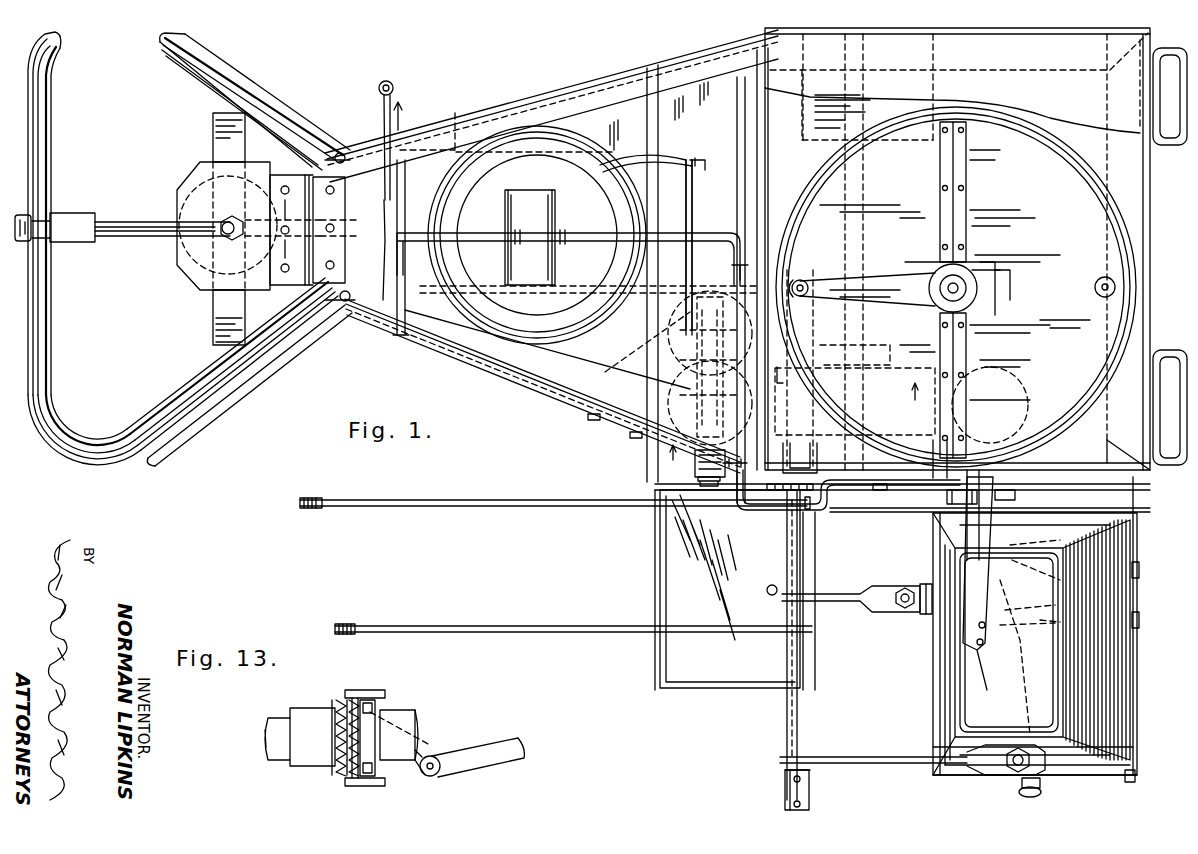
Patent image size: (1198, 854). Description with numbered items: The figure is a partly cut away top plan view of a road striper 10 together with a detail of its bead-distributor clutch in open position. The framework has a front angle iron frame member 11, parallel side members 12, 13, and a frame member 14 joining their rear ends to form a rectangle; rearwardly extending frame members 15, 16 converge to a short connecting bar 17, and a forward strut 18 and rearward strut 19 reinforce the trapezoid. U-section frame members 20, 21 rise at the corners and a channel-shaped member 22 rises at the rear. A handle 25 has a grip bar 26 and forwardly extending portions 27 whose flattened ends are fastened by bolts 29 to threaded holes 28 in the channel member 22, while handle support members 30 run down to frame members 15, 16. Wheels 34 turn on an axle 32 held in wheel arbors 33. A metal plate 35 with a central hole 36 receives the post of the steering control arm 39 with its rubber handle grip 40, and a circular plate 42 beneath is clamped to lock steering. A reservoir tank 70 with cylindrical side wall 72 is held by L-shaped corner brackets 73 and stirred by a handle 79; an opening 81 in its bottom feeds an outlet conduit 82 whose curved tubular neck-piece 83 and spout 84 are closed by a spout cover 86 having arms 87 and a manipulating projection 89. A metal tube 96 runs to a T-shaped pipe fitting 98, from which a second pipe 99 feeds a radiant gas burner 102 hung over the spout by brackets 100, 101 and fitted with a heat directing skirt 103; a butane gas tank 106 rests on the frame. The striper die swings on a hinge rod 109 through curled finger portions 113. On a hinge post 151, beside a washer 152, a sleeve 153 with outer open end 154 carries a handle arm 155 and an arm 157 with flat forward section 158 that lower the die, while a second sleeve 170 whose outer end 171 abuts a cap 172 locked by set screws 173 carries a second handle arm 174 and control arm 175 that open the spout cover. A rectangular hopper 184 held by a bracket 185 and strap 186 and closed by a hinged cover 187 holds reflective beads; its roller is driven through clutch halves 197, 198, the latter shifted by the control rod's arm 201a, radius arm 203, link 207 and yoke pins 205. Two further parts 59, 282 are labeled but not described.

In FIG. 1, the road striper 10 is at (412, 84).
In FIG. 1, the angle iron frame member 11 is at (1106, 138).
In FIG. 1, the side member 12 is at (1070, 62).
In FIG. 1, the side member 13 is at (1078, 445).
In FIG. 1, the frame member 14 is at (770, 160).
In FIG. 1, the rearwardly extending frame member 15 is at (712, 110).
In FIG. 1, the frame member 16 is at (624, 353).
In FIG. 1, the connecting bar 17 is at (350, 243).
In FIG. 1, the forward strut 18 is at (796, 317).
In FIG. 1, the rearward strut 19 is at (384, 197).
In FIG. 1, the frame member 20 is at (765, 52).
In FIG. 1, the U frame member 21 is at (800, 470).
In FIG. 1, the channel-shaped member 22 is at (345, 277).
In FIG. 1, the handle 25 is at (50, 318).
In FIG. 1, the grip bar 26 is at (50, 357).
In FIG. 1, the forwardly extending portions 27 is at (210, 75).
In FIG. 1, the hole 28 is at (350, 165).
In FIG. 1, the bolts 29 is at (356, 130).
In FIG. 1, the handle support member 30 is at (296, 104).
In FIG. 1, the axle 32 is at (863, 190).
In FIG. 1, the wheel arbors 33 is at (920, 153).
In FIG. 1, the wheels 34 is at (972, 77).
In FIG. 1, the metal plate 35 is at (198, 178).
In FIG. 1, the hole 36 is at (225, 240).
In FIG. 1, the steering control arm 39 is at (147, 222).
In FIG. 1, the rubber handle grip 40 is at (97, 200).
In FIG. 1, the circular plate 42 is at (178, 283).
In FIG. 1, the support bar 59 is at (203, 325).
In FIG. 1, the reservoir tank 70 is at (1052, 134).
In FIG. 1, the cylindrical side wall 72 is at (1115, 195).
In FIG. 1, the L-shaped corner brackets 73 is at (785, 210).
In FIG. 1, the handle 79 is at (908, 272).
In FIG. 1, the opening 81 is at (1005, 385).
In FIG. 1, the outlet conduit 82 is at (1025, 504).
In FIG. 1, the curved tubular neck-piece 83 is at (1012, 430).
In FIG. 1, the spout 84 is at (1020, 570).
In FIG. 1, the spout cover 86 is at (1058, 606).
In FIG. 1, the arms 87 is at (1020, 585).
In FIG. 1, the manipulating projection 89 is at (1058, 625).
In FIG. 1, the metal tube 96 is at (493, 230).
In FIG. 1, the T-shaped pipe fitting 98 is at (537, 228).
In FIG. 1, the second pipe 99 is at (600, 232).
In FIG. 1, the bracket member 100 is at (947, 496).
In FIG. 1, the second bracket 101 is at (972, 690).
In FIG. 1, the butane radiant gas burner 102 is at (945, 678).
In FIG. 1, the heat directing metal skirt 103 is at (932, 697).
In FIG. 1, the high pressure butane gas tank 106 is at (618, 156).
In FIG. 1, the horizontal hinge rod 109 is at (1124, 780).
In FIG. 1, the curled finger portions 113 is at (1140, 620).
In FIG. 1, the hinge post 151 is at (787, 548).
In FIG. 1, the washer 152 is at (822, 492).
In FIG. 1, the cylindrical sleeve 153 is at (785, 572).
In FIG. 1, the outer open end 154 is at (786, 613).
In FIG. 1, the handle arm 155 is at (572, 492).
In FIG. 1, the arm 157 is at (862, 590).
In FIG. 1, the flat forward section 158 is at (922, 584).
In FIG. 1, the second sleeve 170 is at (779, 675).
In FIG. 1, the outer end 171 is at (786, 776).
In FIG. 1, the cap 172 is at (812, 800).
In FIG. 1, the set screws 173 is at (800, 780).
In FIG. 1, the second handle arm 174 is at (576, 622).
In FIG. 1, the control arm 175 is at (893, 755).
In FIG. 1, the rectangular hopper 184 is at (824, 544).
In FIG. 1, the bracket 185 is at (626, 430).
In FIG. 1, the strap 186 is at (655, 505).
In FIG. 1, the hinged cover 187 is at (815, 655).
In FIG. 1, the clutch half 197 is at (698, 488).
In FIG. 13, the clutch half 197 is at (333, 700).
In FIG. 13, the clutch half 198 is at (356, 700).
In FIG. 1, the forwardly extending arm 201a is at (507, 121).
In FIG. 1, the radius arm 203 is at (693, 205).
In FIG. 13, the radius arm 203 is at (492, 770).
In FIG. 13, the pins 205 is at (386, 694).
In FIG. 13, the link 207 is at (434, 750).
In FIG. 1, the pump housing 282 is at (740, 410).